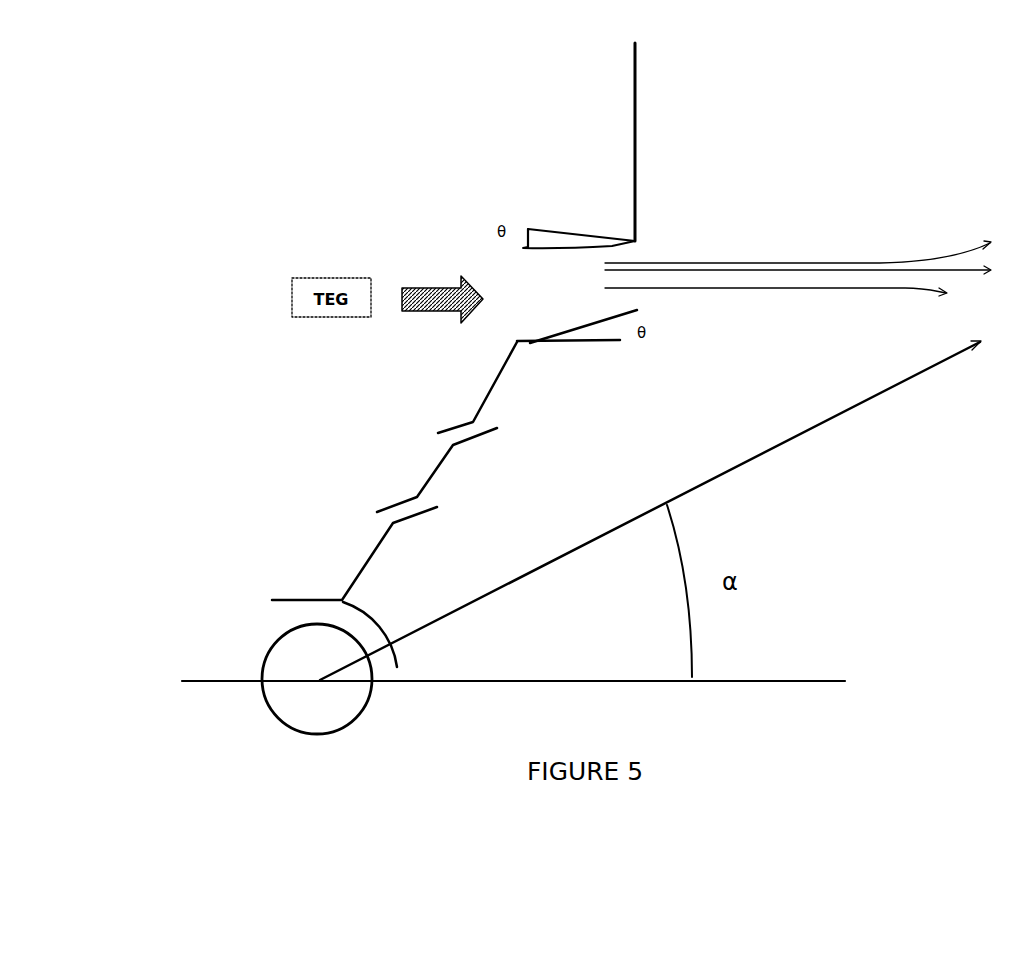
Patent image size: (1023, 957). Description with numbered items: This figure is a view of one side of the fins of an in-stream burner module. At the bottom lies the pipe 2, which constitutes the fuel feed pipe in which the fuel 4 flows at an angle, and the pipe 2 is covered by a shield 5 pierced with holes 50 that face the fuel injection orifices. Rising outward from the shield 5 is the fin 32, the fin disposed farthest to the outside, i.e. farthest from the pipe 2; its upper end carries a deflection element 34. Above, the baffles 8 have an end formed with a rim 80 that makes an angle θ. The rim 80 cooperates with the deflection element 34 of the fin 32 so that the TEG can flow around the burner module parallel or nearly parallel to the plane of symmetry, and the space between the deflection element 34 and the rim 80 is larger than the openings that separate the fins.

The pipe 2 is at (275, 717).
The fuel 4 is at (853, 408).
The shield 5 is at (292, 597).
The baffles 8 is at (638, 110).
The fin 32 is at (488, 378).
The deflection element 34 is at (585, 326).
The holes 50 is at (390, 648).
The rim 80 is at (558, 227).